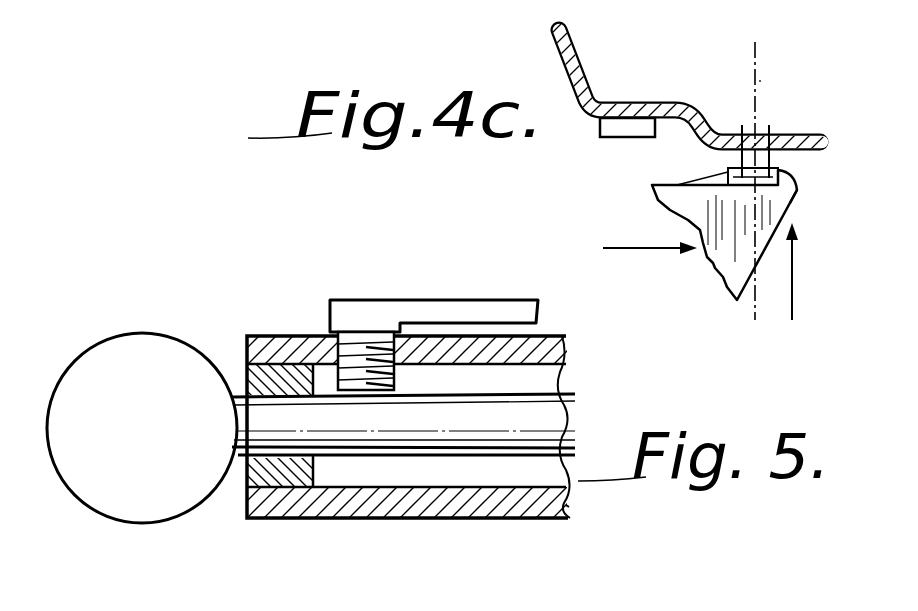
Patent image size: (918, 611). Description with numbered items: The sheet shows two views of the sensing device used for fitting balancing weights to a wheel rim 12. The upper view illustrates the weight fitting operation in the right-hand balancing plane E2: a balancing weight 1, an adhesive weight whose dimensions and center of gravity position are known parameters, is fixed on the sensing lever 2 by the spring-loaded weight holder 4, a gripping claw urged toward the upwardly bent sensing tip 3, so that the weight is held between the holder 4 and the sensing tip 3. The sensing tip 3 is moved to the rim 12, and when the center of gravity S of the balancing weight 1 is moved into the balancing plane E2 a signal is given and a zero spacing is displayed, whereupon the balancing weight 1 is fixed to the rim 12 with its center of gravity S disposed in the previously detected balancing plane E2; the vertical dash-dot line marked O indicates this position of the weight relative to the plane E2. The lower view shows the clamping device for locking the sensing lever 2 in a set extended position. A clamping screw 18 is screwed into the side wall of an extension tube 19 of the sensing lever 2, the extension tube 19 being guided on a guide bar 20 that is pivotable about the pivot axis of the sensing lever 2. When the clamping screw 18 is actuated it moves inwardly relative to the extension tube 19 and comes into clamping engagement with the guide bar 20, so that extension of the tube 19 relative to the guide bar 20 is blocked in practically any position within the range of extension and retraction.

In FIG. 4C, the wheel rim 12 is at (582, 75).
In FIG. 4C, the balancing weight 1 is at (632, 128).
In FIG. 4C, the sensing lever 2 is at (686, 206).
In FIG. 5, the sensing lever 2 is at (583, 515).
In FIG. 4C, the sensing tip 3 is at (799, 195).
In FIG. 4C, the weight holder 4 is at (728, 171).
In FIG. 4C, the center of gravity S is at (770, 130).
In FIG. 4C, the origin O is at (753, 162).
In FIG. 4C, the balancing plane E2 is at (760, 80).
In FIG. 5, the clamping screw 18 is at (356, 345).
In FIG. 5, the extension tube 19 is at (533, 350).
In FIG. 5, the guide bar 20 is at (522, 435).